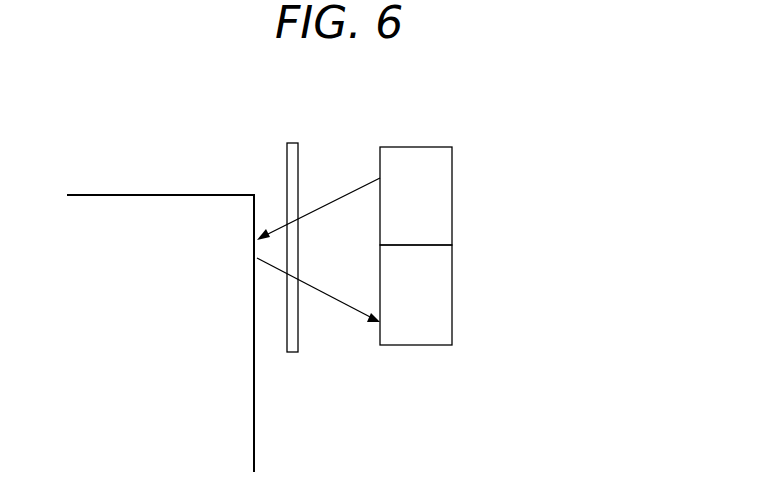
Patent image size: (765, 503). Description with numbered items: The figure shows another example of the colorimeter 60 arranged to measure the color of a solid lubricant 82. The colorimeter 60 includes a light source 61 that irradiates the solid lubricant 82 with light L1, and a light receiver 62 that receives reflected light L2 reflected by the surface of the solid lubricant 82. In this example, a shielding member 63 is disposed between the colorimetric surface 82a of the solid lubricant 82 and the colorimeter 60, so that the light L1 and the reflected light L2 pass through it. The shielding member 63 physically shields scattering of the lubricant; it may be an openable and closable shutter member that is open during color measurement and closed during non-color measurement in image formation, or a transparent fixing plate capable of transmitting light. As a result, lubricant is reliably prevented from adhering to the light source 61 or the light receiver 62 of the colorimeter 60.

The solid lubricant 82 is at (146, 205).
The colorimetric surface 82a is at (257, 212).
The shielding member 63 is at (296, 143).
The colorimeter 60 is at (471, 246).
The light source 61 is at (452, 212).
The light receiver 62 is at (444, 295).
The light L1 is at (318, 195).
The reflected light L2 is at (318, 309).